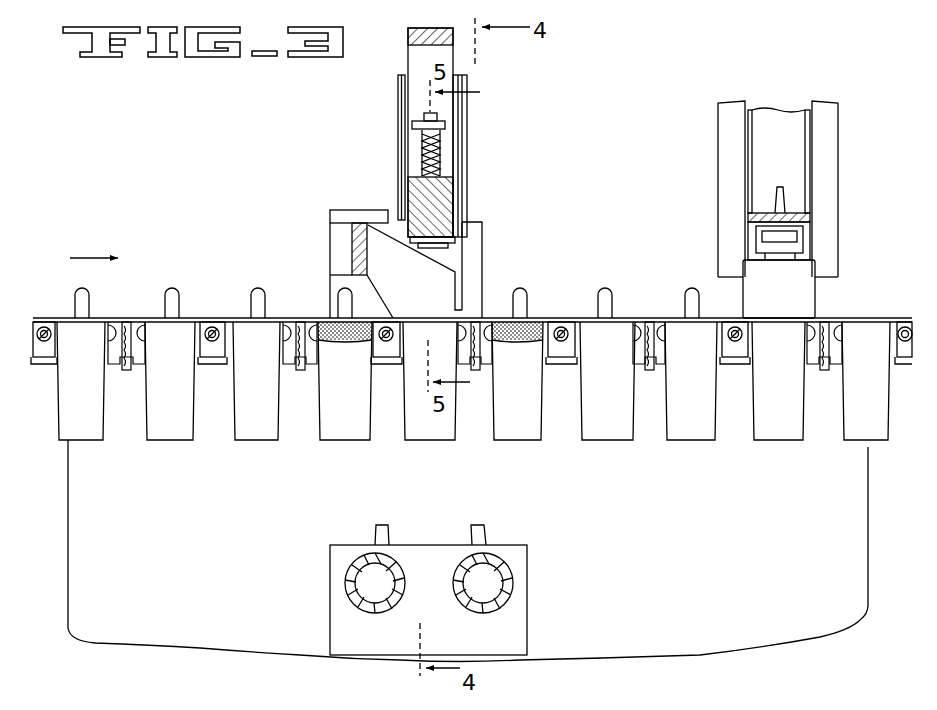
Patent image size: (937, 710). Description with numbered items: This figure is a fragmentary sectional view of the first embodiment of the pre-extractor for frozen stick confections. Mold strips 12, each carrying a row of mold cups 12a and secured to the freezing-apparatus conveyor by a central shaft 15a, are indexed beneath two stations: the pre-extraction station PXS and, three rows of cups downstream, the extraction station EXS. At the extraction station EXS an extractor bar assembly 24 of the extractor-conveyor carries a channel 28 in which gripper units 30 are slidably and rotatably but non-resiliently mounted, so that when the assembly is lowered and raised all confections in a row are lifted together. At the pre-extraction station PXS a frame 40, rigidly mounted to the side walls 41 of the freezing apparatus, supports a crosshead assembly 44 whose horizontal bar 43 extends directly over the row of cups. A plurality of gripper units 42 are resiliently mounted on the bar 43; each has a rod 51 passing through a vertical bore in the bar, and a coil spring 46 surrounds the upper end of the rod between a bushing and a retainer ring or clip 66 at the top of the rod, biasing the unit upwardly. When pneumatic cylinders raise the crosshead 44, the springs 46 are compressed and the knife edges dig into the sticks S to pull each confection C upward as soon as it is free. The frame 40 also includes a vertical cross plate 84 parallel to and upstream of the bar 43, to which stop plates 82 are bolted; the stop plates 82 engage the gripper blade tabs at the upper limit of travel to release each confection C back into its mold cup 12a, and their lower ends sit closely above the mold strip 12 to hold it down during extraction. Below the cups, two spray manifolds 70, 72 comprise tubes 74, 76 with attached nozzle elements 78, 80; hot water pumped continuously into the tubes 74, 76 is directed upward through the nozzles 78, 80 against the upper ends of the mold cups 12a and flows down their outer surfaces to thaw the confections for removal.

The mold strip 12 is at (140, 318).
The mold cups 12a is at (237, 434).
The shaft 15a is at (50, 320).
The extractor bar assembly 24 is at (812, 215).
The channel 28 is at (812, 238).
The gripper units 30 is at (802, 297).
The frame 40 is at (486, 243).
The side walls 41 is at (738, 559).
The gripper units 42 is at (457, 244).
The horizontal bar 43 is at (452, 183).
The crosshead assembly 44 is at (406, 62).
The coil spring 46 is at (423, 142).
The rod 51 is at (423, 165).
The retainer ring or clip 66 is at (442, 128).
The spray manifold 70 is at (346, 600).
The spray manifold 72 is at (520, 595).
The tube 74 is at (347, 583).
The tube 76 is at (507, 578).
The nozzle element 78 is at (374, 530).
The nozzle element 80 is at (488, 530).
The stop plate 82 is at (350, 254).
The vertical cross plate 84 is at (350, 225).
The sticks S is at (246, 292).
The confection C is at (320, 322).
The pre-extraction station PXS is at (472, 78).
The extraction station EXS is at (783, 100).